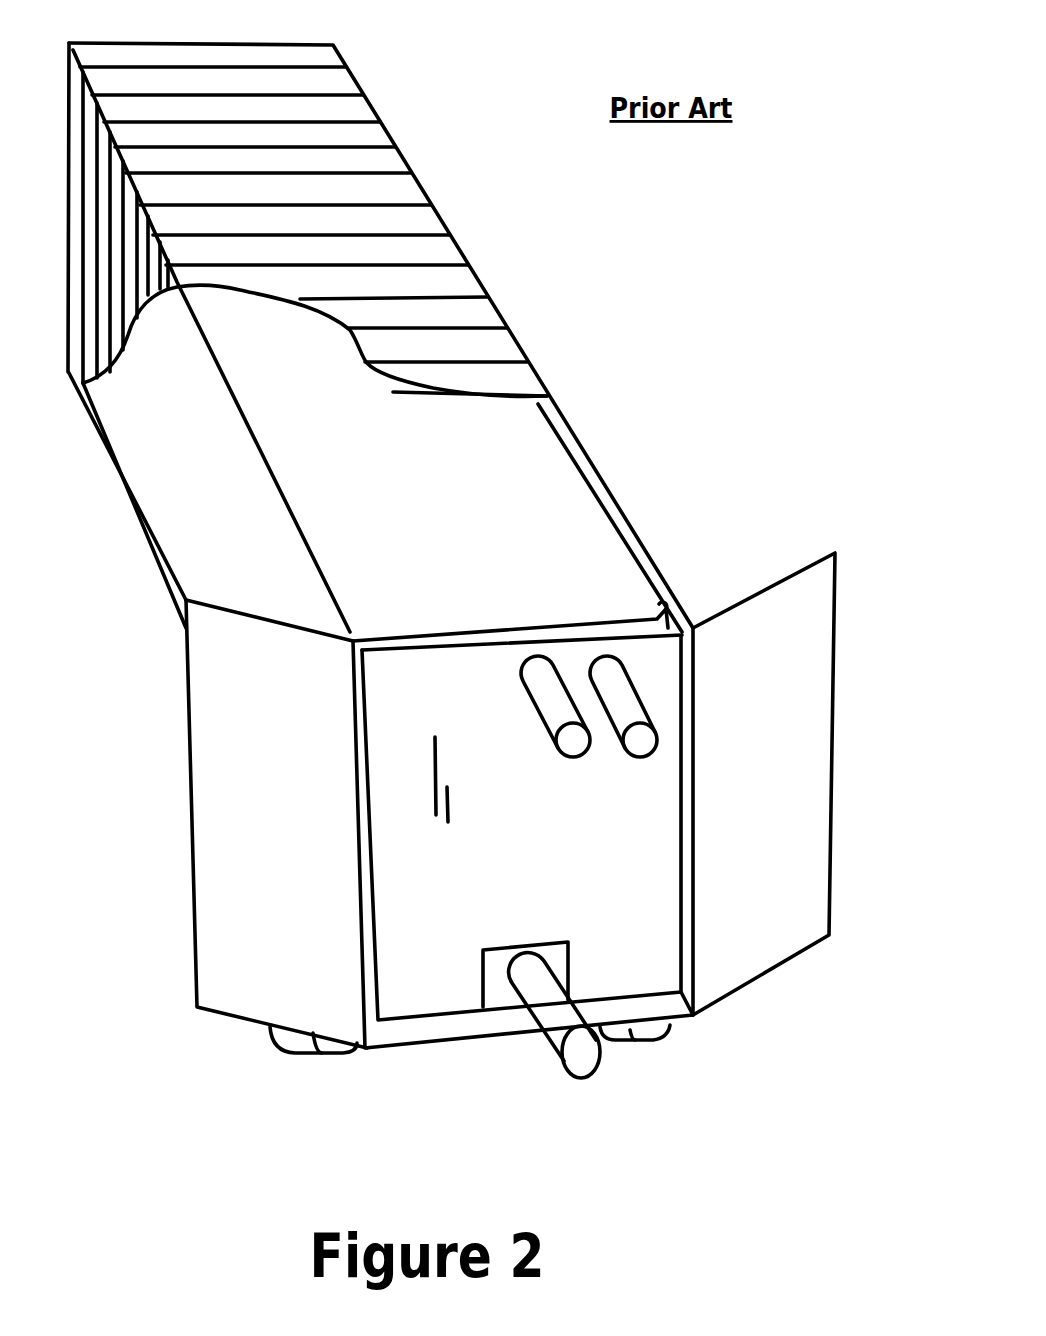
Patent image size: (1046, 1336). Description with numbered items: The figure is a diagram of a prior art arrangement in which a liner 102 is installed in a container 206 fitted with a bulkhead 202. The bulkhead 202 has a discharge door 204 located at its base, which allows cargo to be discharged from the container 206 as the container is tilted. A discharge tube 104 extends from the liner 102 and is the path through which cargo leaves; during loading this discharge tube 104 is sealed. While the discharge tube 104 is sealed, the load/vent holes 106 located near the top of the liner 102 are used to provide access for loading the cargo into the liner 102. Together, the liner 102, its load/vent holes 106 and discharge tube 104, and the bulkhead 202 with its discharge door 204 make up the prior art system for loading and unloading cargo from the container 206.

The liner 102 is at (595, 568).
The discharge tube 104 is at (550, 1035).
The load/vent holes 106 is at (640, 757).
The bulkhead 202 is at (392, 677).
The discharge door 204 is at (497, 957).
The container 206 is at (327, 107).